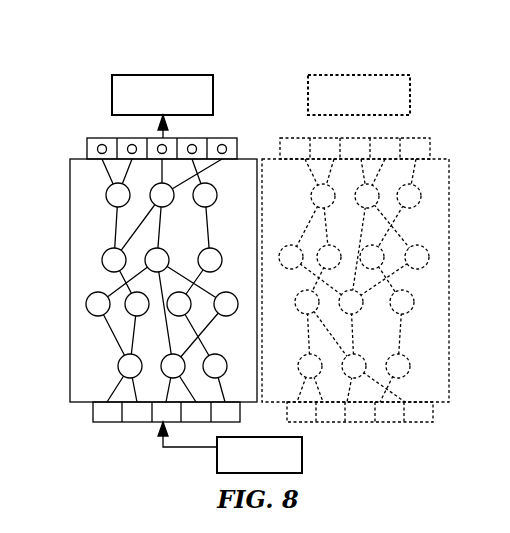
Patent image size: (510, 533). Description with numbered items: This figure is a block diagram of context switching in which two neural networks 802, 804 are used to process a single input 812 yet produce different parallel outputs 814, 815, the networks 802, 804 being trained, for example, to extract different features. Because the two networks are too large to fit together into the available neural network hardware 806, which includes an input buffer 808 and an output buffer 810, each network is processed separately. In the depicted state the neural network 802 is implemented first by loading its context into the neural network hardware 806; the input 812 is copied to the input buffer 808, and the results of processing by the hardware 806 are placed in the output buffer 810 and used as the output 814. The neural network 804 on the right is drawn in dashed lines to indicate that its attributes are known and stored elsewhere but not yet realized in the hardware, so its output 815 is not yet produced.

The neural network 802 is at (67, 70).
The neural network 804 is at (462, 70).
The neural network hardware 806 is at (70, 207).
The input buffer 808 is at (93, 411).
The output buffer 810 is at (87, 147).
The input 812 is at (217, 464).
The output 814 is at (112, 95).
The output 815 is at (410, 94).